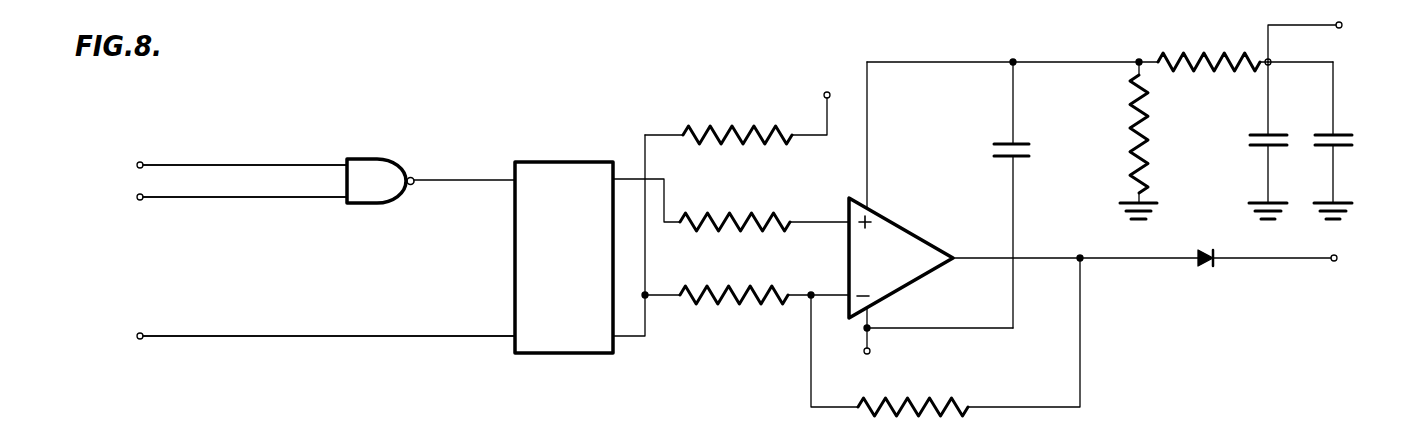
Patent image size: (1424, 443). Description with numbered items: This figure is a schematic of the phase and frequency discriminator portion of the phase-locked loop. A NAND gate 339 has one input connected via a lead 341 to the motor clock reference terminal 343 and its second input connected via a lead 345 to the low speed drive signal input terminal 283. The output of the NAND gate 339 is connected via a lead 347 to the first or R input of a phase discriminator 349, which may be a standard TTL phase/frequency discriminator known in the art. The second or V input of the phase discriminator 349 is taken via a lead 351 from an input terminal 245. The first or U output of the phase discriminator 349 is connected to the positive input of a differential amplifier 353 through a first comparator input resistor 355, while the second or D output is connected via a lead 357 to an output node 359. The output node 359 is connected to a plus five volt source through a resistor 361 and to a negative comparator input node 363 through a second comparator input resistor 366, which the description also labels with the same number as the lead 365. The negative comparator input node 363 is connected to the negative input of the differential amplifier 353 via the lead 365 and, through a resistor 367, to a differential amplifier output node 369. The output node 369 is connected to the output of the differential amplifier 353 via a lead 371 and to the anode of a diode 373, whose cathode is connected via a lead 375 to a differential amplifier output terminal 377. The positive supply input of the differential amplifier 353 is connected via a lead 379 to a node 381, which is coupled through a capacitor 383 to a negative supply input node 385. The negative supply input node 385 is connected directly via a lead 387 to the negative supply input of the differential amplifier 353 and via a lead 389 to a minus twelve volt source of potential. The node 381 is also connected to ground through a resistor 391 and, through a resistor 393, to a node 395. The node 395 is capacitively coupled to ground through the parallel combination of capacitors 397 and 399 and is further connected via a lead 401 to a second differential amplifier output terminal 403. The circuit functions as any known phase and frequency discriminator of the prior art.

The input terminal 245 is at (137, 336).
The low speed drive signal input terminal 283 is at (137, 197).
The NAND gate 339 is at (394, 128).
The lead 341 is at (266, 165).
The motor clock reference terminal 343 is at (137, 165).
The lead 345 is at (275, 197).
The lead 347 is at (467, 180).
The phase discriminator 349 is at (583, 287).
The lead 351 is at (236, 336).
The differential amplifier 353 is at (903, 270).
The first comparator input resistor 355 is at (745, 222).
The lead 357 is at (645, 338).
The output node 359 is at (646, 294).
The resistor 361 is at (728, 135).
The negative comparator input node 363 is at (820, 257).
The lead 365 is at (833, 298).
The resistor 366 is at (733, 295).
The resistor 367 is at (943, 407).
The differential amplifier output node 369 is at (1079, 257).
The lead 371 is at (984, 258).
The diode 373 is at (1206, 251).
The lead 375 is at (1265, 260).
The differential amplifier output terminal 377 is at (1336, 261).
The lead 379 is at (881, 62).
The node 381 is at (1013, 62).
The capacitor 383 is at (994, 150).
The negative supply input node 385 is at (869, 318).
The lead 387 is at (870, 306).
The lead 389 is at (870, 329).
The resistor 391 is at (1133, 146).
The resistor 393 is at (1203, 62).
The node 395 is at (1262, 68).
The capacitor 397 is at (1250, 138).
The capacitor 399 is at (1352, 135).
The lead 401 is at (1312, 28).
The second differential amplifier output terminal 403 is at (1342, 25).